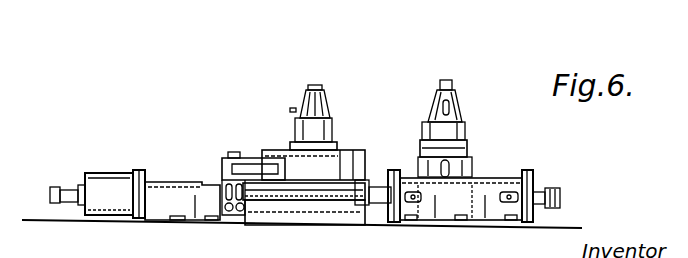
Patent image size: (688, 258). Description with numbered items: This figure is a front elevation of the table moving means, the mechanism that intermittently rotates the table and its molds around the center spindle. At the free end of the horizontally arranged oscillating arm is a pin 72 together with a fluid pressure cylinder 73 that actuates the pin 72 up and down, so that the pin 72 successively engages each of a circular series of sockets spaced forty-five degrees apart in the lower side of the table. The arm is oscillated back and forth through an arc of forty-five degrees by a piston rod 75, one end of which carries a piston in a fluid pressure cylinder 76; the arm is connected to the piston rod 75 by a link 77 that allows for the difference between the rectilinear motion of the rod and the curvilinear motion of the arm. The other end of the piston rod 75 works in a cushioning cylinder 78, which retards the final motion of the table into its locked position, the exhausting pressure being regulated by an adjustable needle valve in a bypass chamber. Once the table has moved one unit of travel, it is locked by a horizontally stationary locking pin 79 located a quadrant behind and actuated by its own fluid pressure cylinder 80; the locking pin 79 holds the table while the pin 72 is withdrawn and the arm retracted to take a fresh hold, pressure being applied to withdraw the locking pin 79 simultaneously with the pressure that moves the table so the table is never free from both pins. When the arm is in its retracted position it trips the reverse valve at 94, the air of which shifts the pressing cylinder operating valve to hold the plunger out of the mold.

The pin 72 is at (316, 85).
The fluid pressure cylinder 73 is at (300, 130).
The piston rod 75 is at (342, 198).
The fluid pressure cylinder 76 is at (497, 178).
The link 77 is at (253, 170).
The cushioning cylinder 78 is at (110, 188).
The locking pin 79 is at (448, 84).
The fluid pressure cylinder 80 is at (458, 132).
The reverse valve location 94 is at (553, 192).